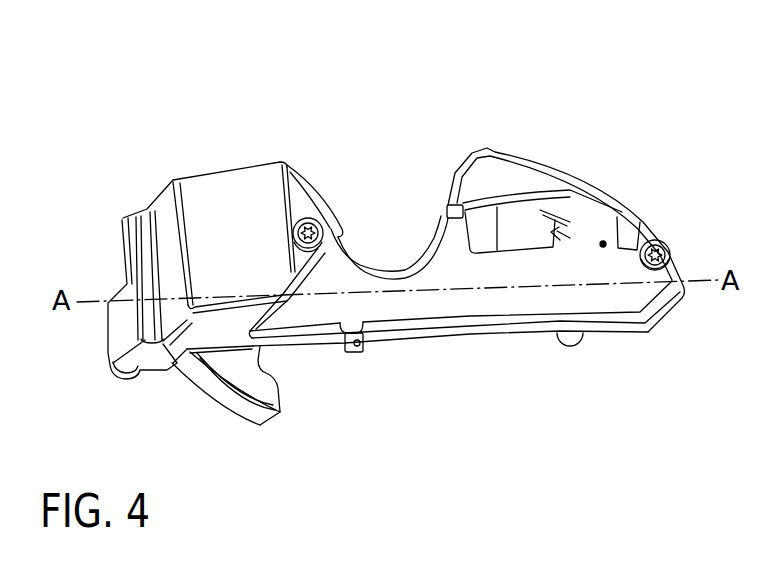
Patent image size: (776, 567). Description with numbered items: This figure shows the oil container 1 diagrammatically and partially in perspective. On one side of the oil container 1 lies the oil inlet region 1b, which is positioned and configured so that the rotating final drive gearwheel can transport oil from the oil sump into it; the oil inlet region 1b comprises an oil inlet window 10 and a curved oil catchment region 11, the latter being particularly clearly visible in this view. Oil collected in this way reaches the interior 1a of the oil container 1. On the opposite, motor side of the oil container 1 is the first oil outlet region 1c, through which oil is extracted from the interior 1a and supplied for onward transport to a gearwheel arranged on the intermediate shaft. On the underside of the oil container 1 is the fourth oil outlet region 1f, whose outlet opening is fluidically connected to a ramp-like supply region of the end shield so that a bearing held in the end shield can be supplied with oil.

The oil container 1 is at (484, 133).
The interior 1a is at (514, 228).
The oil inlet window 10 is at (542, 179).
The oil inlet region 1b is at (576, 222).
The first oil outlet region 1c is at (223, 415).
The fourth oil outlet region 1f is at (363, 348).
The curved oil catchment region 11 is at (605, 242).